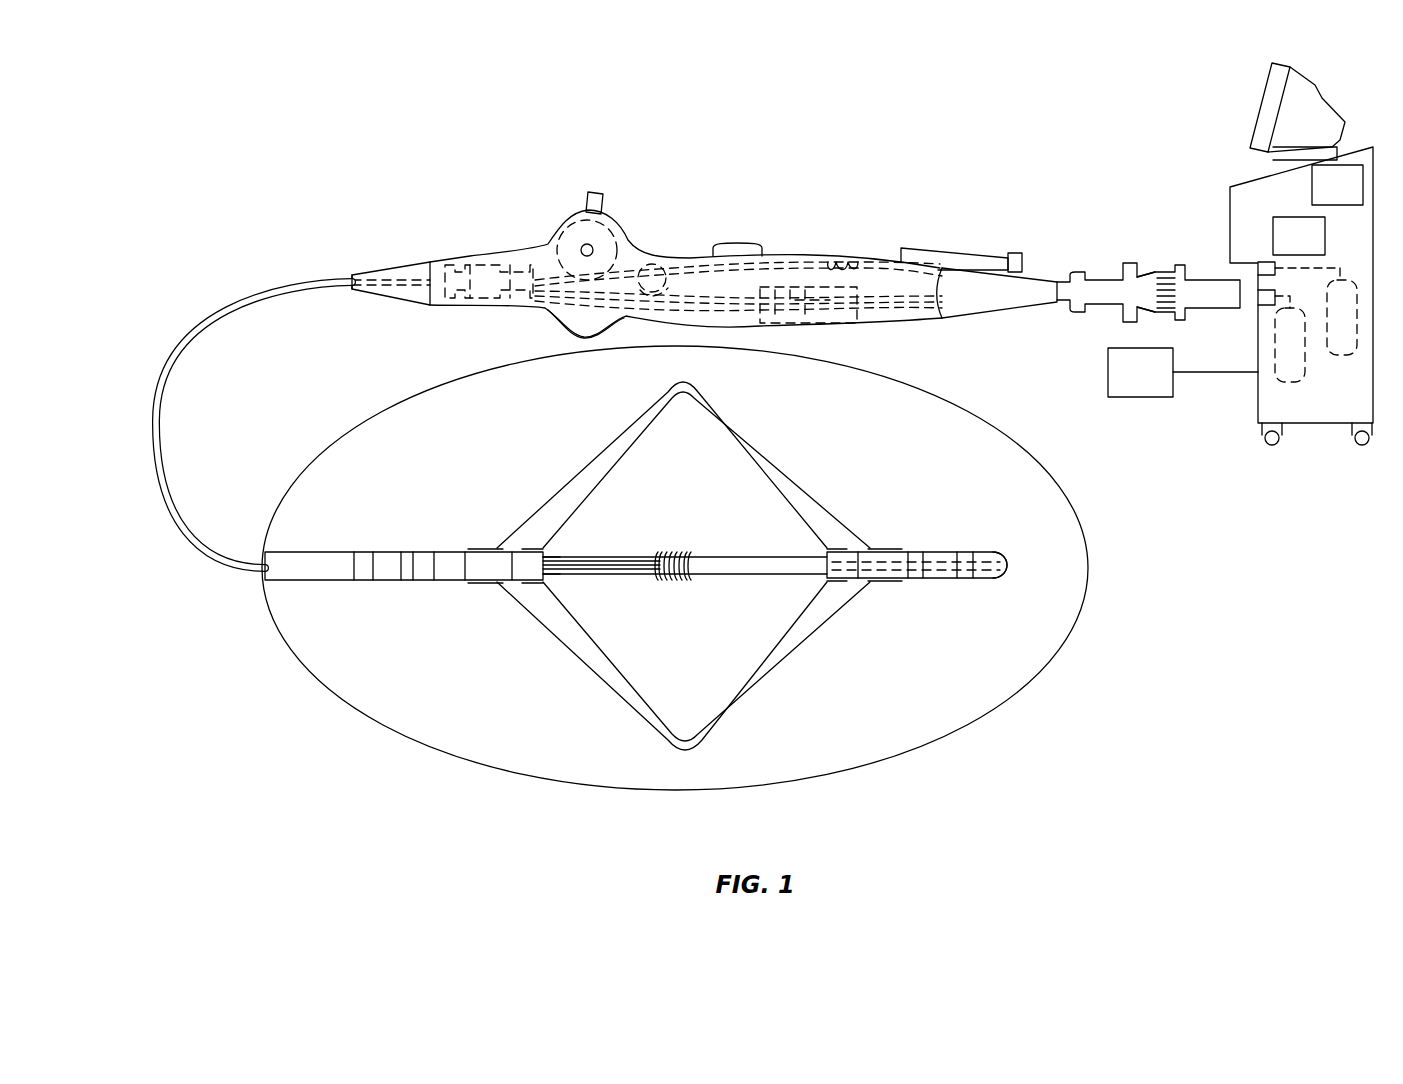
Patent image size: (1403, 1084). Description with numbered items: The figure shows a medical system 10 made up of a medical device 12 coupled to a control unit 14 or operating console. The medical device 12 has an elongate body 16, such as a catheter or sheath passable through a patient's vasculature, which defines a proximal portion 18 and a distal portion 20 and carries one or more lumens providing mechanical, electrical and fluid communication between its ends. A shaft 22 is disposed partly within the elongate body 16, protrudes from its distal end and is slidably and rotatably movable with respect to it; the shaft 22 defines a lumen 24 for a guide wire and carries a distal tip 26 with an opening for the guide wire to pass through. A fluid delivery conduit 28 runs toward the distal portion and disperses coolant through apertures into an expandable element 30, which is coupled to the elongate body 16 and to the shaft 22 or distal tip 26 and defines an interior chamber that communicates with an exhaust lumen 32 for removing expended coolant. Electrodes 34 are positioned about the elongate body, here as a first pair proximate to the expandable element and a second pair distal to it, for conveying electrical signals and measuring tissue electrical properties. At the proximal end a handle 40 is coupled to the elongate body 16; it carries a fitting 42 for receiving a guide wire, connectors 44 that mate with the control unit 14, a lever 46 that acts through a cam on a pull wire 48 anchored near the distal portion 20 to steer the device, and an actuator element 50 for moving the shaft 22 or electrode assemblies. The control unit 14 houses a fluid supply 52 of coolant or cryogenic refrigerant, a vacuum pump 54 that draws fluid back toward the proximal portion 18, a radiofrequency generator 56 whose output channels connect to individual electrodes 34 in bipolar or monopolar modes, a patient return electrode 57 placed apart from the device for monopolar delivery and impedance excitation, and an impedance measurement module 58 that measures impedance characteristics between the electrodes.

The medical system 10 is at (1210, 537).
The medical device 12 is at (400, 128).
The control unit 14 is at (1242, 182).
The elongate body 16 is at (211, 308).
The proximal portion 18 is at (354, 275).
The distal portion 20 is at (858, 479).
The shaft 22 is at (756, 578).
The lumen 24 is at (1006, 566).
The distal tip 26 is at (945, 552).
The fluid delivery conduit 28 is at (665, 554).
The expandable element 30 is at (772, 441).
The exhaust lumen 32 is at (572, 585).
The electrodes 34 is at (408, 550).
The handle 40 is at (556, 318).
The fitting 42 is at (962, 258).
The connectors 44 is at (1208, 280).
The lever 46 is at (598, 188).
The pull wire 48 is at (567, 236).
The actuator element 50 is at (734, 243).
The fluid supply 52 is at (1293, 386).
The vacuum pump 54 is at (1343, 358).
The radiofrequency generator 56 is at (1337, 185).
The patient return electrode 57 is at (1183, 372).
The impedance measurement module 58 is at (1299, 236).